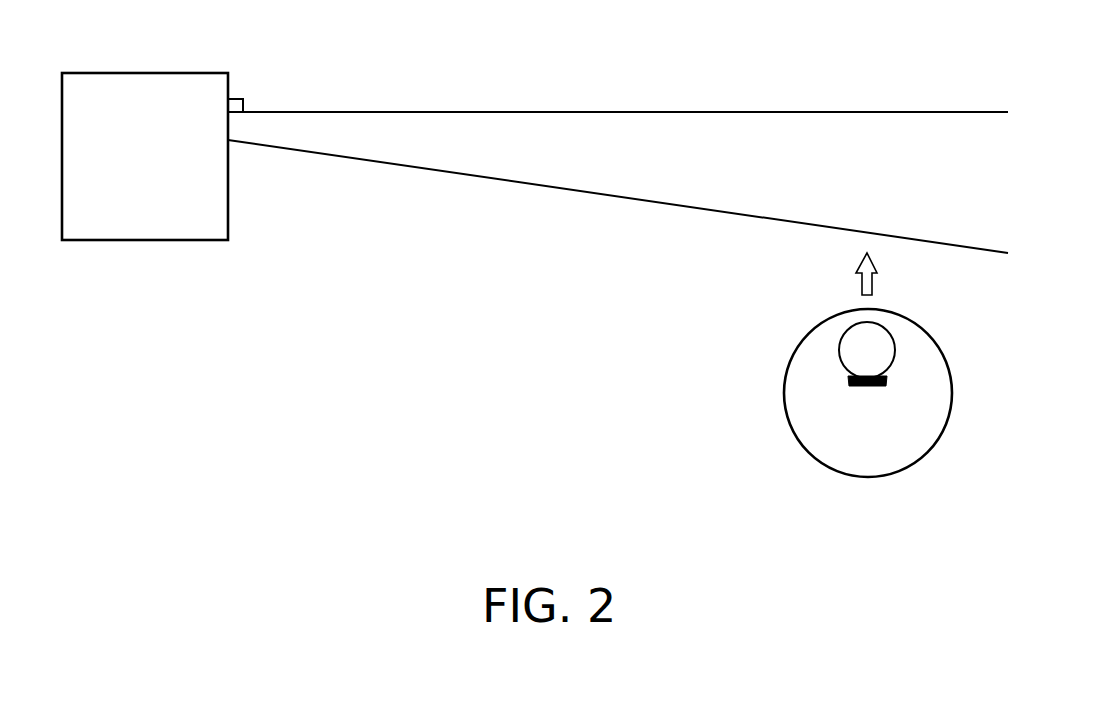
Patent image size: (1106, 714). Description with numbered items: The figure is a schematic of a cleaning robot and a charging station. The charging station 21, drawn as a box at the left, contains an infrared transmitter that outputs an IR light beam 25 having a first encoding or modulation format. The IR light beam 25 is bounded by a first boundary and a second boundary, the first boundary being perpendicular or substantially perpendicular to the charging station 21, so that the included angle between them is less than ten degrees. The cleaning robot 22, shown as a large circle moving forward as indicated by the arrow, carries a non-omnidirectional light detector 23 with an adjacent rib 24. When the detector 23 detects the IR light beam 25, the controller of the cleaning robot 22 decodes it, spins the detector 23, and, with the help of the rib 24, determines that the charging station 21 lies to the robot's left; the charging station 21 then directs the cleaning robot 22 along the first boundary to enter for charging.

The charging station 21 is at (131, 202).
The cleaning robot 22 is at (783, 388).
The non-omnidirectional light detector 23 is at (885, 350).
The rib 24 is at (865, 386).
The IR light beam 25 is at (612, 112).